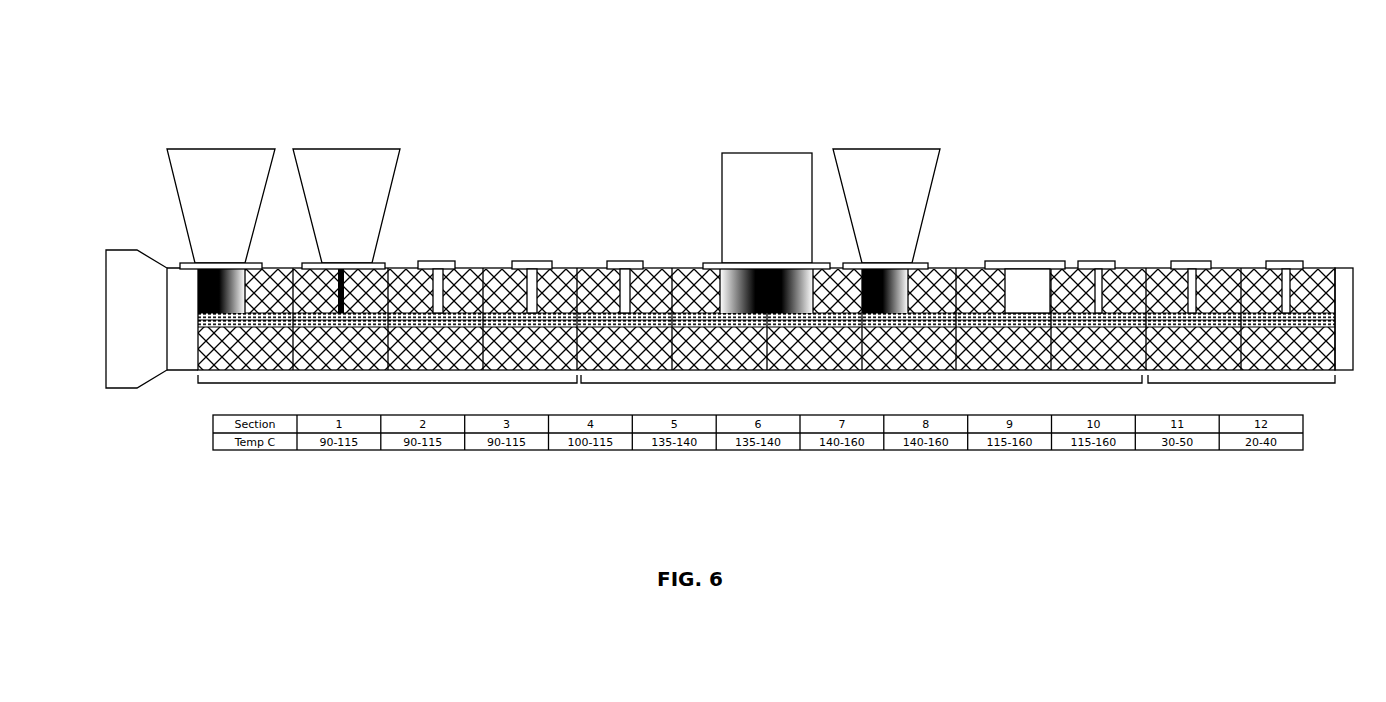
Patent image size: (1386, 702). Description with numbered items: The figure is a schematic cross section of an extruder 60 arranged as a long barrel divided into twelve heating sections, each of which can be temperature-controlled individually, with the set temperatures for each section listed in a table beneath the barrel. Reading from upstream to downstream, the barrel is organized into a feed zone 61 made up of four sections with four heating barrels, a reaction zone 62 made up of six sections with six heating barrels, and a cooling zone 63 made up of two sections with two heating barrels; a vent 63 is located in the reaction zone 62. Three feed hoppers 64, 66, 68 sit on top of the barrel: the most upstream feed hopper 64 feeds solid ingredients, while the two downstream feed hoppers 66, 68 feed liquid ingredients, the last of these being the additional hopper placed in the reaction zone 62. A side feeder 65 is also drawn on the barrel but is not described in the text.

The extruder 60 is at (1185, 177).
The feed zone 61 is at (390, 383).
The reaction zone 62 is at (865, 383).
The cooling zone 63 is at (1238, 384).
The feed hopper 64 is at (245, 157).
The side feeder 65 is at (793, 167).
The feed hopper 66 is at (362, 160).
The feed hopper 68 is at (915, 160).